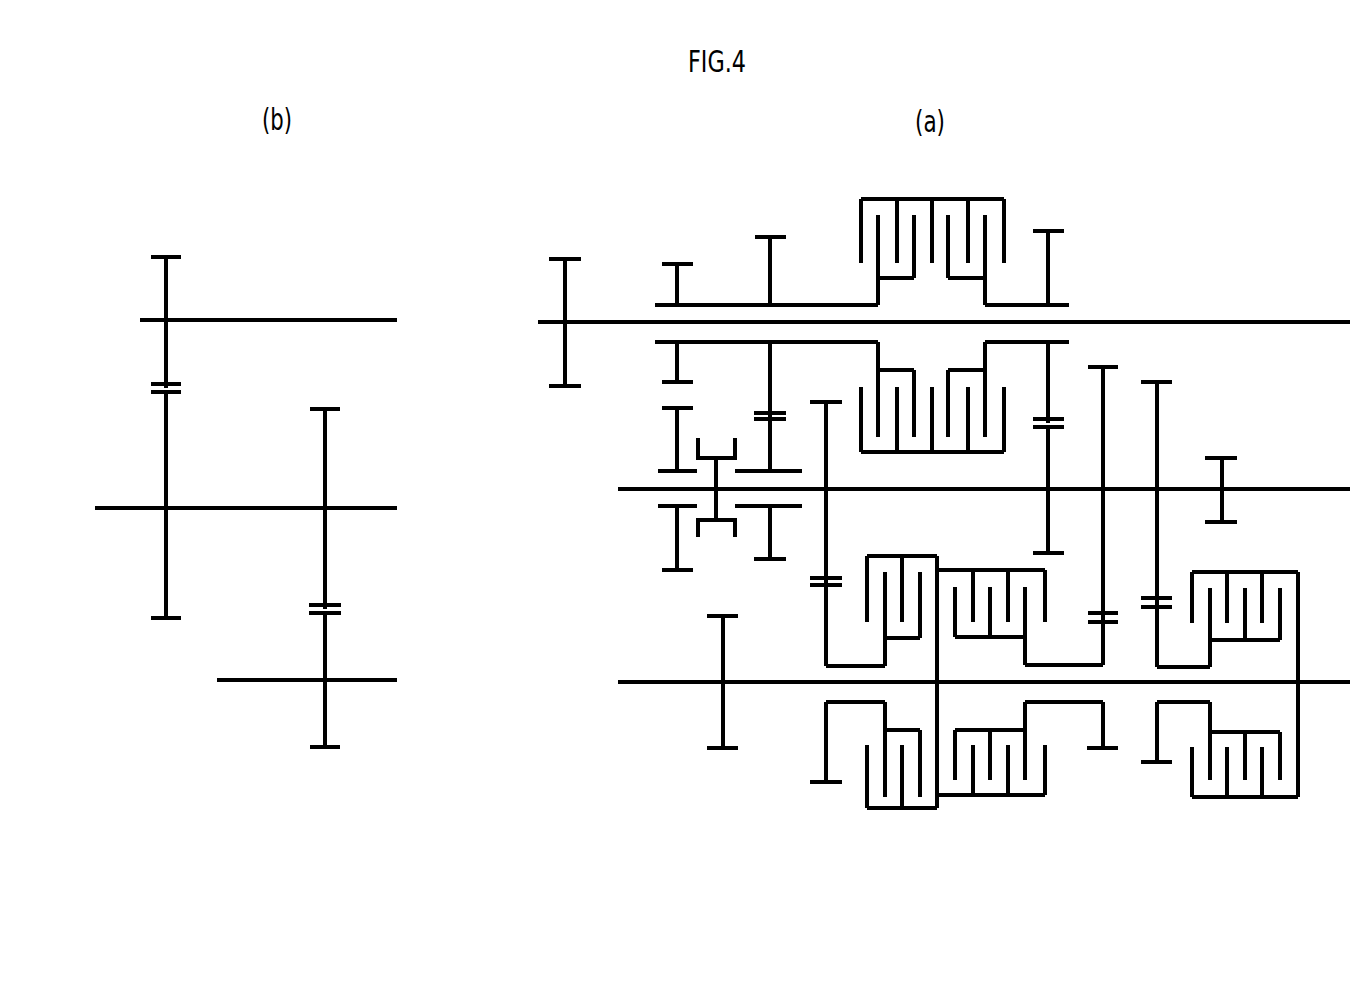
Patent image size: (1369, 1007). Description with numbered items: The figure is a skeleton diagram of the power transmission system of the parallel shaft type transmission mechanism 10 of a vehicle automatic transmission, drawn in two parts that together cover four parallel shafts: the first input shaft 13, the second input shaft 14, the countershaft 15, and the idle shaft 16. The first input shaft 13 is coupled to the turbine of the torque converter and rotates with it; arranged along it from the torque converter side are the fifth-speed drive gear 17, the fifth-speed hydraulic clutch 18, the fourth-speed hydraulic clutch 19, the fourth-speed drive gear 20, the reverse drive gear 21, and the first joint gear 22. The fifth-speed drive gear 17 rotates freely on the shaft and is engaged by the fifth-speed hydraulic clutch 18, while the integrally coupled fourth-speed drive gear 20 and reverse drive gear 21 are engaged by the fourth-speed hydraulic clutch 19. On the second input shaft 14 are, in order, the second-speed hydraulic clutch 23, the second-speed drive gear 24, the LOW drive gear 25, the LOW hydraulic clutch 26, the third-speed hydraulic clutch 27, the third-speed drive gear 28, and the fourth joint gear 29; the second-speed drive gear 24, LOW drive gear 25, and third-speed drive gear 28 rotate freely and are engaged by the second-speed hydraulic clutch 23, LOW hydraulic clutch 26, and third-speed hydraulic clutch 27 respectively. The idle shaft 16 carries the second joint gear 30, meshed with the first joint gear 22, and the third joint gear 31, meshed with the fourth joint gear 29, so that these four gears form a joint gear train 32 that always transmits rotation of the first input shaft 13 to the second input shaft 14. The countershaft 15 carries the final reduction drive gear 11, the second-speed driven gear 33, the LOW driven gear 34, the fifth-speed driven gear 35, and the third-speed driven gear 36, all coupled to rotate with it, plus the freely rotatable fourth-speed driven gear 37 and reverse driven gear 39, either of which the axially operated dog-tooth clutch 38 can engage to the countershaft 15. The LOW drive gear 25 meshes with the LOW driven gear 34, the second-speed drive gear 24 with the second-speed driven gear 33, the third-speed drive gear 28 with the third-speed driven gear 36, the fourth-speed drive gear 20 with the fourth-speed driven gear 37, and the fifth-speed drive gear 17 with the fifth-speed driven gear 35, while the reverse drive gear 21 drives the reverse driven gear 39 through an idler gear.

The parallel shaft type transmission mechanism 10 is at (1132, 248).
The final reduction drive gear 11 is at (1226, 456).
The first input shaft 13 is at (367, 318).
The second input shaft 14 is at (383, 678).
The countershaft 15 is at (630, 487).
The idle shaft 16 is at (222, 506).
The 5-speed drive gear 17 is at (1054, 229).
The 5-speed hydraulic clutch 18 is at (980, 197).
The 4-speed hydraulic clutch 19 is at (872, 197).
The 4-speed drive gear 20 is at (776, 235).
The reverse drive gear 21 is at (684, 262).
The first joint gear 22 is at (158, 255).
The 2-speed hydraulic clutch 23 is at (1244, 799).
The 2-speed drive gear 24 is at (1150, 764).
The LOW drive gear 25 is at (1096, 750).
The LOW hydraulic clutch 26 is at (993, 797).
The 3-speed hydraulic clutch 27 is at (920, 810).
The 3-speed drive gear 28 is at (818, 784).
The fourth joint gear 29 is at (316, 749).
The second joint gear 30 is at (157, 620).
The third joint gear 31 is at (332, 407).
The joint gear train 32 is at (180, 705).
The 2-speed driven gear 33 is at (1163, 381).
The LOW driven gear 34 is at (1108, 366).
The 5-speed driven gear 35 is at (1053, 556).
The 3-speed driven gear 36 is at (819, 400).
The 4-speed driven gear 37 is at (763, 561).
The dog-tooth clutch 38 is at (721, 438).
The reverse driven gear 39 is at (668, 572).